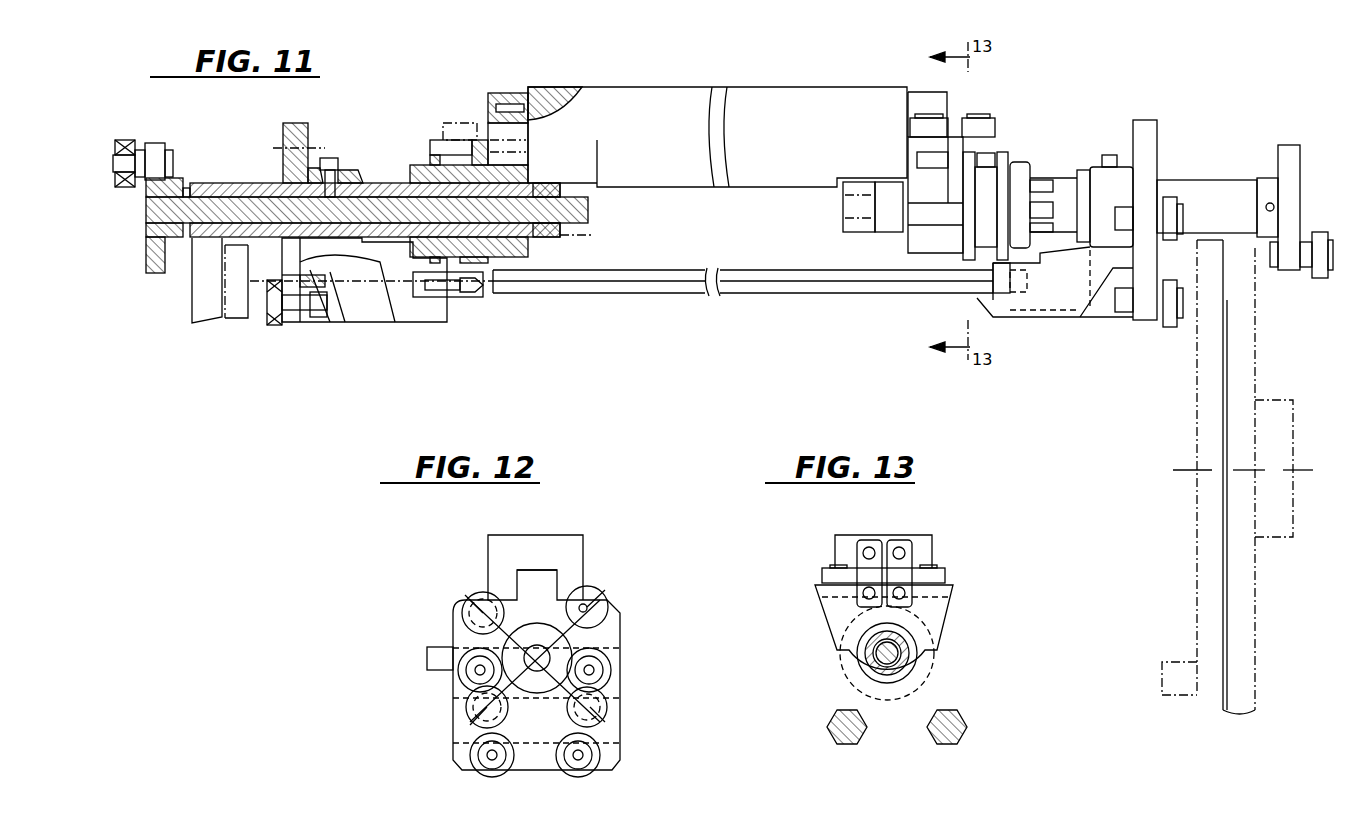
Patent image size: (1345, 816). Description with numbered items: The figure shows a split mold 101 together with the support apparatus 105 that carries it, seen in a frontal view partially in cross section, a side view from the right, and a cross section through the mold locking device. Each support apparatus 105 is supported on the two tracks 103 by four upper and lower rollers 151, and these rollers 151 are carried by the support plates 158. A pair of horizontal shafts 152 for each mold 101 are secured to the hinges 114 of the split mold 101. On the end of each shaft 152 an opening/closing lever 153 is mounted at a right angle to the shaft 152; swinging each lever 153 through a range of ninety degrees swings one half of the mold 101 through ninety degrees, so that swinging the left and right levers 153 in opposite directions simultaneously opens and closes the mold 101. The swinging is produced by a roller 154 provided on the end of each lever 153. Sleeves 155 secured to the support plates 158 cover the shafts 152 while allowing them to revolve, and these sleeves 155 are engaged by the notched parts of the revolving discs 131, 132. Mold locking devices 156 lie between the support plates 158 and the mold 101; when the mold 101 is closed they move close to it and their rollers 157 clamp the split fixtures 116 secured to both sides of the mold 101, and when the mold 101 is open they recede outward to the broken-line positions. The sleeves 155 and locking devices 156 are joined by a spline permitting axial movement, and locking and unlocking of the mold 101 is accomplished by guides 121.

In FIG. 11, the mold 101 is at (778, 118).
In FIG. 12, the mold 101 is at (572, 552).
In FIG. 13, the mold 101 is at (843, 548).
In FIG. 11, the tracks 103 is at (240, 292).
In FIG. 11, the support apparatus 105 is at (1092, 125).
In FIG. 12, the support apparatus 105 is at (440, 635).
In FIG. 11, the hinges 114 is at (556, 240).
In FIG. 11, the split fixtures 116 is at (920, 92).
In FIG. 13, the split fixtures 116 is at (897, 545).
In FIG. 11, the guides 121 is at (985, 153).
In FIG. 11, the revolving disc 131 is at (1233, 467).
In FIG. 11, the revolving disc 132 is at (1255, 352).
In FIG. 11, the rollers 151 is at (278, 325).
In FIG. 12, the rollers 151 is at (605, 672).
In FIG. 11, the horizontal shafts 152 is at (203, 197).
In FIG. 12, the horizontal shafts 152 is at (537, 670).
In FIG. 13, the horizontal shafts 152 is at (893, 655).
In FIG. 11, the opening/closing lever 153 is at (146, 240).
In FIG. 12, the opening/closing lever 153 is at (592, 612).
In FIG. 11, the roller 154 is at (128, 140).
In FIG. 12, the roller 154 is at (472, 707).
In FIG. 11, the sleeves 155 is at (248, 183).
In FIG. 13, the sleeves 155 is at (887, 665).
In FIG. 11, the mold locking devices 156 is at (950, 135).
In FIG. 13, the mold locking devices 156 is at (966, 613).
In FIG. 11, the rollers 157 is at (935, 120).
In FIG. 13, the rollers 157 is at (935, 577).
In FIG. 11, the support plates 158 is at (297, 123).
In FIG. 12, the support plates 158 is at (537, 583).